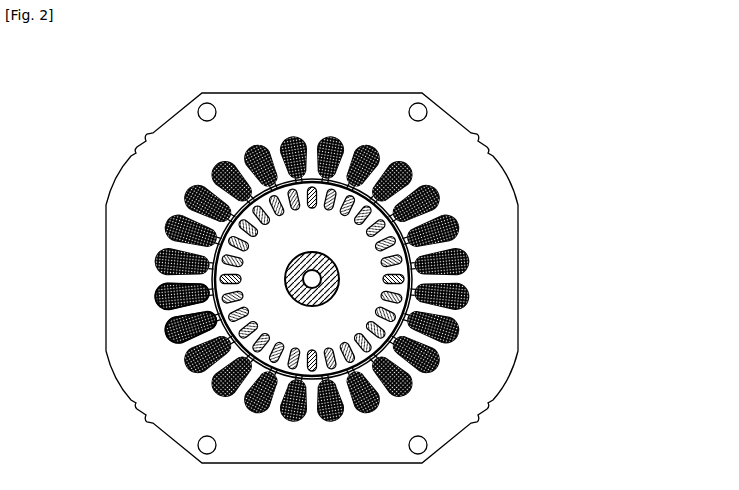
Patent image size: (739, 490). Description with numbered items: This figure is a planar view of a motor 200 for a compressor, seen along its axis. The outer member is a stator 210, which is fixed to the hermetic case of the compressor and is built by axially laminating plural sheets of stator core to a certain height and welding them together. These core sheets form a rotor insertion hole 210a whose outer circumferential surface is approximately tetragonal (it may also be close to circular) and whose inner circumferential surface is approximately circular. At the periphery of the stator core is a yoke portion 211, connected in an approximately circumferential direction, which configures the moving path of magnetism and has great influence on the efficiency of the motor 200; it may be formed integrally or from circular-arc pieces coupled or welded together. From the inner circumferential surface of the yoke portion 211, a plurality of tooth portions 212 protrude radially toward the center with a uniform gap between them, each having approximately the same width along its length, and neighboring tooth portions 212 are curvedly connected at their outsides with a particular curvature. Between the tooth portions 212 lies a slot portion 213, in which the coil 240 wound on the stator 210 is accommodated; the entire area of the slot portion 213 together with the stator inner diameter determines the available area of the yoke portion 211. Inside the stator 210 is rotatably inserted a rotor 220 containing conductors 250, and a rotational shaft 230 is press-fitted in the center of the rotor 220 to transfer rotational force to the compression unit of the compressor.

The motor 200 is at (447, 93).
The stator 210 is at (499, 153).
The rotor insertion hole 210a is at (200, 275).
The yoke portion 211 is at (250, 102).
The tooth portions 212 is at (223, 193).
The slot portion 213 is at (193, 229).
The rotor 220 is at (348, 182).
The rotational shaft 230 is at (342, 277).
The coil 240 is at (163, 328).
The conductors 250 is at (195, 373).